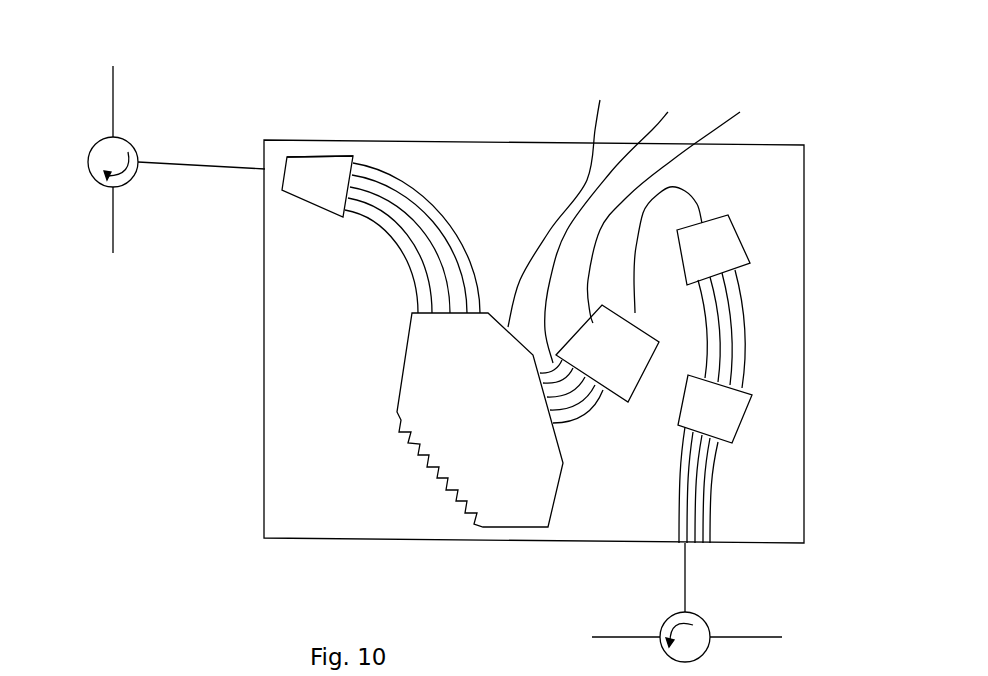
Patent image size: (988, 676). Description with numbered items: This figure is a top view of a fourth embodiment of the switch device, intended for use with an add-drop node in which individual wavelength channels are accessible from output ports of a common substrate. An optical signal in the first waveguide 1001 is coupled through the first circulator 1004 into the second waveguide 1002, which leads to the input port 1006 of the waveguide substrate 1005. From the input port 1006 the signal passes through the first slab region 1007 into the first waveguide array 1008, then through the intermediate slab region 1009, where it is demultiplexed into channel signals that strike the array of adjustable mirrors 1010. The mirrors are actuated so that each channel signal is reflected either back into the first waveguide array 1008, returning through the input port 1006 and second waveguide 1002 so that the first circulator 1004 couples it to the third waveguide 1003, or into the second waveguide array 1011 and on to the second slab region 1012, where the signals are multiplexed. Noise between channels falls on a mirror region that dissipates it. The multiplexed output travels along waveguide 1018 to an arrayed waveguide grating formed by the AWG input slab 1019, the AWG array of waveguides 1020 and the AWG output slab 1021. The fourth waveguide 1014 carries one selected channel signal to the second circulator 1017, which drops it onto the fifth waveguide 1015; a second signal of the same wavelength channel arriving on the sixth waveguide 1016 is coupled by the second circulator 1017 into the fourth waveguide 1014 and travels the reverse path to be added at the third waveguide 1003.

The first waveguide 1001 is at (113, 90).
The second waveguide 1002 is at (220, 163).
The third waveguide 1003 is at (113, 240).
The first circulator 1004 is at (88, 167).
The waveguide substrate 1005 is at (263, 428).
The input port 1006 is at (286, 157).
The first slab region 1007 is at (320, 157).
The first waveguide array 1008 is at (413, 183).
The intermediate slab region 1009 is at (571, 201).
The array of adjustable mirrors 1010 is at (445, 478).
The second waveguide array 1011 is at (633, 253).
The second slab region 1012 is at (695, 204).
The fourth waveguide 1014 is at (683, 568).
The fifth waveguide 1015 is at (597, 647).
The sixth waveguide 1016 is at (760, 637).
The second circulator 1017 is at (713, 617).
The waveguide 1018 is at (698, 203).
The AWG input slab 1019 is at (747, 240).
The AWG array of waveguides 1020 is at (748, 337).
The AWG output slab 1021 is at (745, 417).